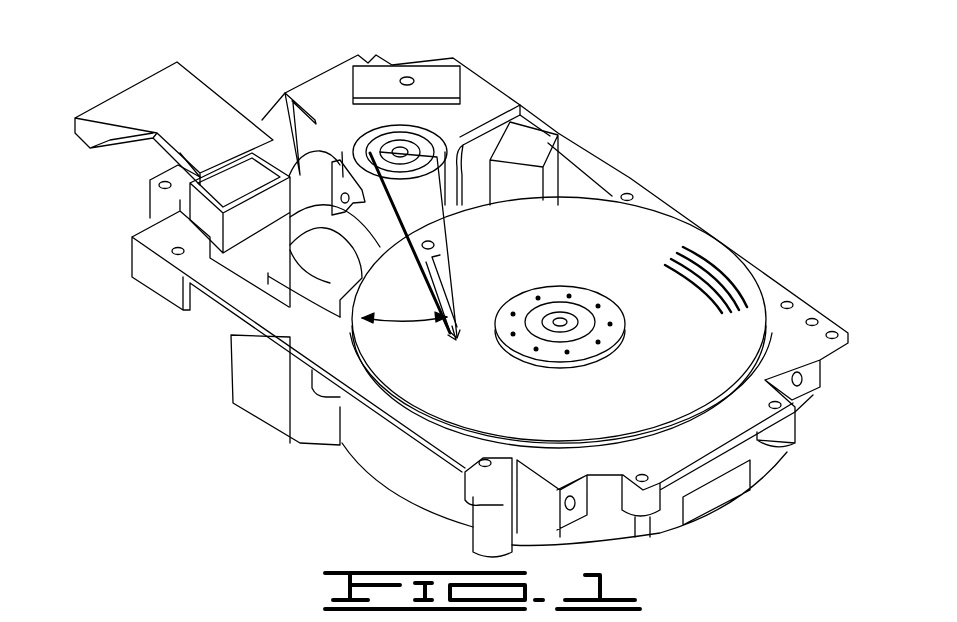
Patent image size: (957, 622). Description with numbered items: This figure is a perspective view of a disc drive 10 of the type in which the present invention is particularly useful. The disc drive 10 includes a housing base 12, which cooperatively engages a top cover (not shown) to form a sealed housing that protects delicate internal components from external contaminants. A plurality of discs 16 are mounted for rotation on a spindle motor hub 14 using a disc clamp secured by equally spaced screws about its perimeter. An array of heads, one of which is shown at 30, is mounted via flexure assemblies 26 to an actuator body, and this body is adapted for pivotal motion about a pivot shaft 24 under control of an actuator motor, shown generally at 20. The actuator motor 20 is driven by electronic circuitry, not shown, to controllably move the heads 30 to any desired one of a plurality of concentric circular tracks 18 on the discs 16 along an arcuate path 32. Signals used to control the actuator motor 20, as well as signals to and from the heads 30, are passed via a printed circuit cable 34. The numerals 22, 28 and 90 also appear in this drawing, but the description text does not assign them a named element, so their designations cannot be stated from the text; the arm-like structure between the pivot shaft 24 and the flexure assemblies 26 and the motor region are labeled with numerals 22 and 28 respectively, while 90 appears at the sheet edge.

The disc drive 10 is at (153, 57).
The housing base 12 is at (385, 495).
The spindle motor hub 14 is at (573, 315).
The discs 16 is at (630, 222).
The concentric circular tracks 18 is at (712, 263).
The actuator motor 20 is at (473, 56).
The actuator arm 22 is at (427, 223).
The pivot shaft 24 is at (400, 153).
The flexure assemblies 26 is at (443, 287).
The voice coil motor 28 is at (447, 353).
The heads 30 is at (463, 337).
The arcuate path 32 is at (389, 320).
The printed circuit cable 34 is at (300, 175).
The numeral (partial, sheet edge) 90 is at (190, 614).